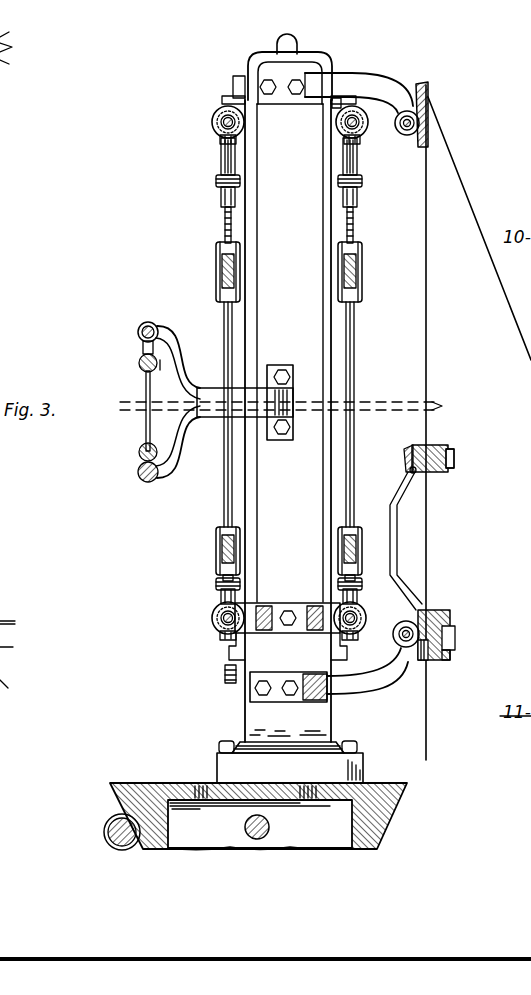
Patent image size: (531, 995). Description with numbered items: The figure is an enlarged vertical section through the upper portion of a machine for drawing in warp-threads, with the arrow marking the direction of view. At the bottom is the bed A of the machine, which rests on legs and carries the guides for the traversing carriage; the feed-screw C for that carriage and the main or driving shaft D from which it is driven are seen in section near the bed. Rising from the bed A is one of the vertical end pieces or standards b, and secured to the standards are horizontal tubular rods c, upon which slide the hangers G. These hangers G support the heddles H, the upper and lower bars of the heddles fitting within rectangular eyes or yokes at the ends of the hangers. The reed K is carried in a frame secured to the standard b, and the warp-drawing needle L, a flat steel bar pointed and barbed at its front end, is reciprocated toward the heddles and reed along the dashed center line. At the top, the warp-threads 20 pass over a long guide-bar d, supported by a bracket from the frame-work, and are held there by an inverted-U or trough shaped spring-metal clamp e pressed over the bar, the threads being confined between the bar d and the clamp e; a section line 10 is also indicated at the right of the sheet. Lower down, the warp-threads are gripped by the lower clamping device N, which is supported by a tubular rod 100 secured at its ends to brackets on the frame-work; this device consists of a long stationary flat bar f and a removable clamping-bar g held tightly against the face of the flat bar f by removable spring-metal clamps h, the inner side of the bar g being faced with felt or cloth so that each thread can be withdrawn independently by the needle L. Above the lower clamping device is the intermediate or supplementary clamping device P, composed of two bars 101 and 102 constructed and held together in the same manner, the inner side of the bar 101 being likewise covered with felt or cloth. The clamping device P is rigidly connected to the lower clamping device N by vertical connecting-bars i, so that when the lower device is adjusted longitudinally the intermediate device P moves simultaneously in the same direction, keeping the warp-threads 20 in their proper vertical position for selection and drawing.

The standard b is at (290, 408).
The tubular rod c is at (213, 124).
The guide-bar d is at (418, 150).
The spring-metal clamp e is at (429, 85).
The warp-threads 20 is at (452, 143).
The line 10 is at (479, 228).
The heddle H is at (226, 468).
The hanger G is at (215, 169).
The warp-drawing needle L is at (366, 404).
The reed K is at (145, 460).
The intermediate clamping device P is at (438, 472).
The clamping bar 101 is at (440, 446).
The clamping bar 102 is at (412, 462).
The vertical connecting-bar i is at (397, 541).
The flat bar f is at (452, 618).
The lower clamping device N is at (455, 640).
The spring-metal clamp h is at (456, 654).
The clamping-bar g is at (436, 660).
The tubular rod 100 is at (404, 655).
The bed A is at (258, 816).
The main or driving shaft D is at (270, 826).
The feed-screw C is at (108, 828).